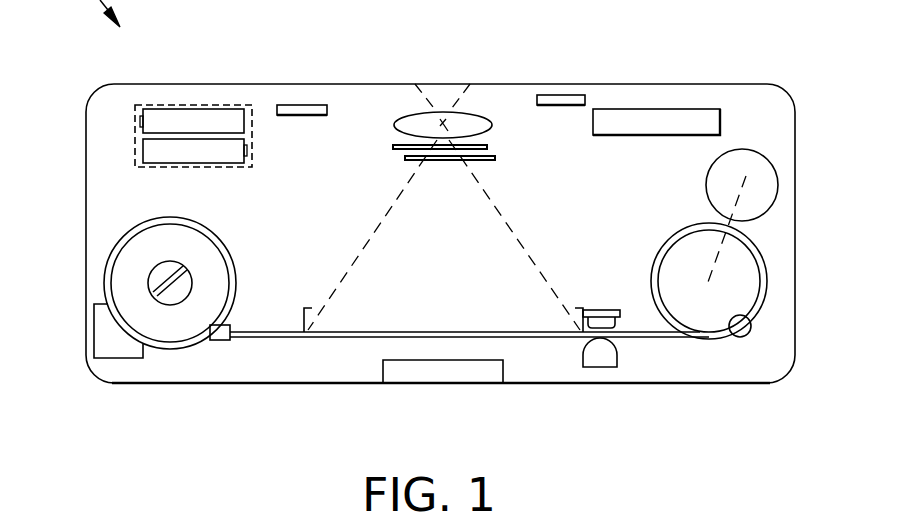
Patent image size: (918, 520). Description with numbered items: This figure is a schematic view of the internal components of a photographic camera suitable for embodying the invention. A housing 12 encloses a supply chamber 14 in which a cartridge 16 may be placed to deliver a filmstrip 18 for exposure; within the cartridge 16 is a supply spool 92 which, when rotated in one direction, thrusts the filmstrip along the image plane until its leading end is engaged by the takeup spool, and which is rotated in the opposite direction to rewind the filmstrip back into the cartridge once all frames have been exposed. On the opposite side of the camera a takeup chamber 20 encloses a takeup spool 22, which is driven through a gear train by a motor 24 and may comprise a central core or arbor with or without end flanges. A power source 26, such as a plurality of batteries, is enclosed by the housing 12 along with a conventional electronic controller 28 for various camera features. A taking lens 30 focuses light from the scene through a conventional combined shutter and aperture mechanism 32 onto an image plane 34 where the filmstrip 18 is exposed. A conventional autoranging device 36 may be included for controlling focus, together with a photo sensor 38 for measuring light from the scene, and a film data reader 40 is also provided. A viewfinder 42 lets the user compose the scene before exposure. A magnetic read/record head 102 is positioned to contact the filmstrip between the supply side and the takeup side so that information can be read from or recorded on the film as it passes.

The housing 12 is at (90, 103).
The supply chamber 14 is at (135, 230).
The cartridge 16 is at (112, 285).
The filmstrip 18 is at (266, 338).
The takeup chamber 20 is at (733, 335).
The takeup spool 22 is at (762, 280).
The motor 24 is at (773, 205).
The power source 26 is at (223, 104).
The electronic controller 28 is at (693, 108).
The taking lens 30 is at (470, 113).
The combined shutter and aperture mechanism 32 is at (490, 148).
The image plane 34 is at (418, 331).
The autoranging device 36 is at (317, 104).
The photo sensor 38 is at (575, 94).
The film data reader 40 is at (97, 335).
The viewfinder 42 is at (475, 375).
The supply spool 92 is at (172, 268).
The magnetic read/record head 102 is at (597, 366).